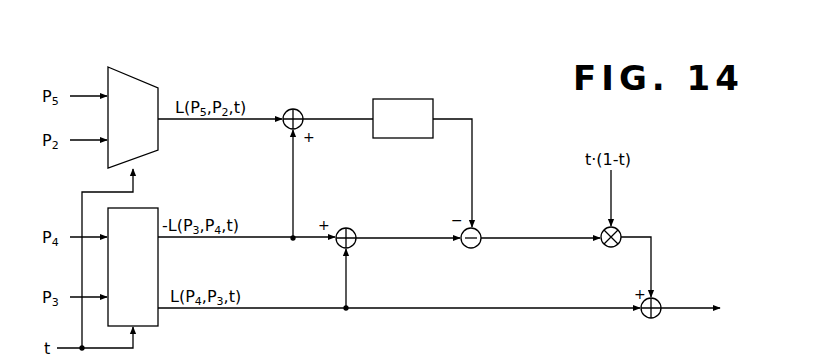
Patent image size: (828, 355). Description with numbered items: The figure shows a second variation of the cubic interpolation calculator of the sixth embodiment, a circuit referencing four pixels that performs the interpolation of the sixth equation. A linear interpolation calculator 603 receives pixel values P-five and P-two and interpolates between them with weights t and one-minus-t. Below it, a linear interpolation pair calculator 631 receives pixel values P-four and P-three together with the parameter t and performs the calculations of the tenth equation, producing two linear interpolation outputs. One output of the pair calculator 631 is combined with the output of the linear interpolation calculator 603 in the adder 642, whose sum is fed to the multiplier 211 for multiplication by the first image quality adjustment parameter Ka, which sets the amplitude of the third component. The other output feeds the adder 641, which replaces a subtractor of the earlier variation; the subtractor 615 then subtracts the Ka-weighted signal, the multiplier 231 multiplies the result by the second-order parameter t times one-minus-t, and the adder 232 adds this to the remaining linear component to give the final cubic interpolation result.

The linear interpolation calculator 603 is at (148, 82).
The linear interpolation pair calculator 631 is at (150, 208).
The adder 642 is at (301, 111).
The image quality adjustment parameter multiplier 211 is at (420, 99).
The adder 641 is at (352, 230).
The subtractor 615 is at (471, 248).
The multiplier 231 is at (619, 230).
The adder 232 is at (659, 301).